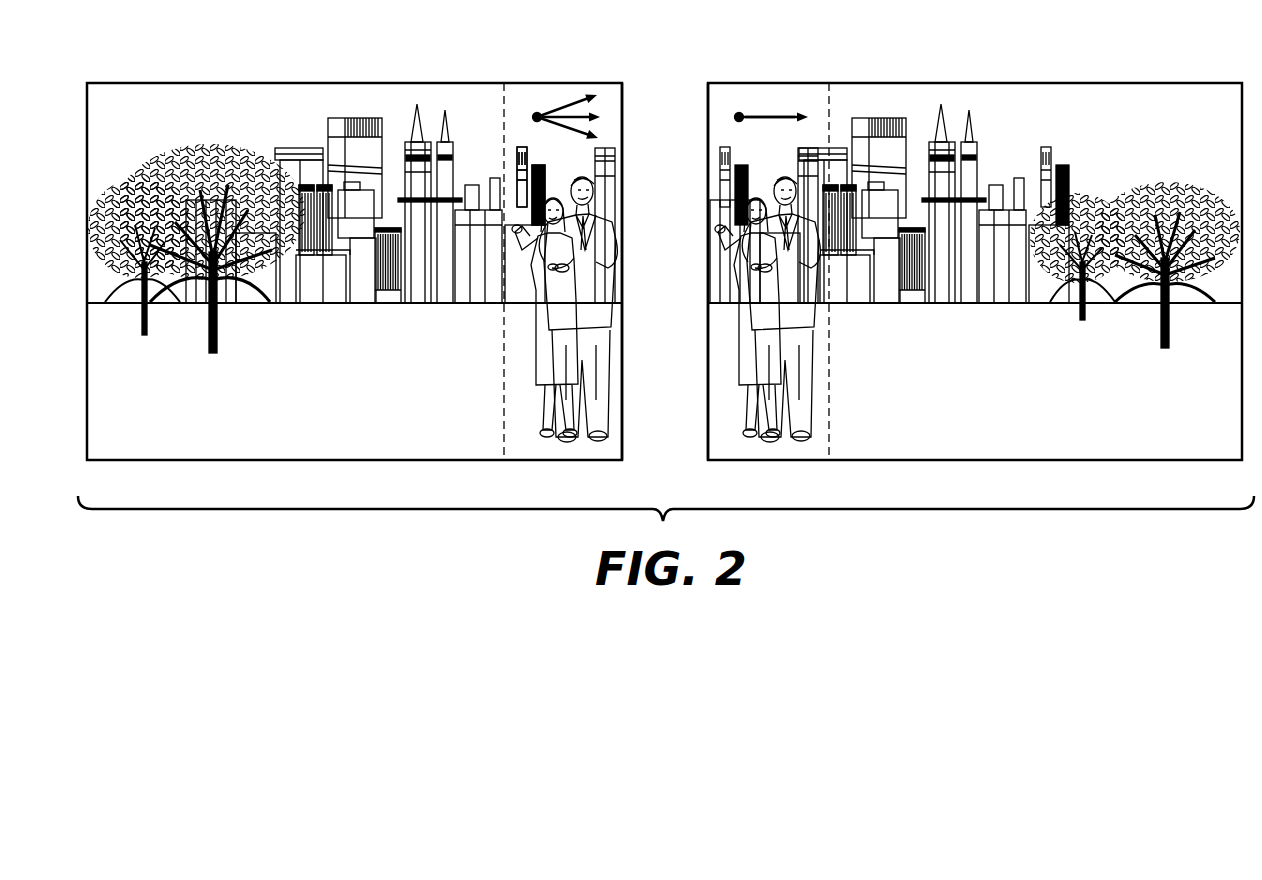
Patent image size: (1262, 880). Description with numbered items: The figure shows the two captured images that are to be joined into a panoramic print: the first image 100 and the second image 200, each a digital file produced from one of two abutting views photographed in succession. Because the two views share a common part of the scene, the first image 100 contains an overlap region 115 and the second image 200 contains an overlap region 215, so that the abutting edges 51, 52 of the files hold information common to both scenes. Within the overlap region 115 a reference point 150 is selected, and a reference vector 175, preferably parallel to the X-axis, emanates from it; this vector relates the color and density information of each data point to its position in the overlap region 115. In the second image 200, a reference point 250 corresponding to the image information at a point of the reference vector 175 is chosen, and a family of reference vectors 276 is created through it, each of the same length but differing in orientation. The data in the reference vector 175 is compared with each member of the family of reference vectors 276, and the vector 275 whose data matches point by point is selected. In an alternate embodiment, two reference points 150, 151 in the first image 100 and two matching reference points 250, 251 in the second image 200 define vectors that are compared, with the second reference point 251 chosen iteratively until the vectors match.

The second image 200 is at (244, 75).
The first image 100 is at (1003, 75).
The reference point 250 is at (537, 112).
The second reference point 251 is at (596, 92).
The family of reference vectors 276 is at (614, 110).
The vector 275 is at (590, 121).
The reference point 150 is at (741, 112).
The second reference point 151 is at (797, 111).
The reference vector 175 is at (771, 115).
The overlap region 215 is at (567, 450).
The overlap region 115 is at (775, 450).
The abutting edge 52 is at (622, 404).
The abutting edge 51 is at (708, 368).